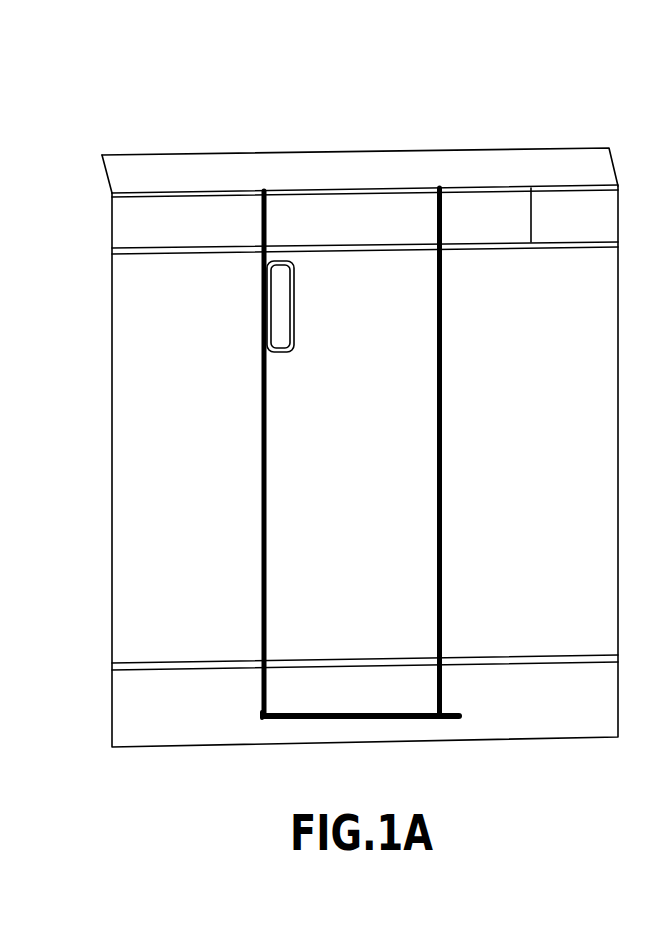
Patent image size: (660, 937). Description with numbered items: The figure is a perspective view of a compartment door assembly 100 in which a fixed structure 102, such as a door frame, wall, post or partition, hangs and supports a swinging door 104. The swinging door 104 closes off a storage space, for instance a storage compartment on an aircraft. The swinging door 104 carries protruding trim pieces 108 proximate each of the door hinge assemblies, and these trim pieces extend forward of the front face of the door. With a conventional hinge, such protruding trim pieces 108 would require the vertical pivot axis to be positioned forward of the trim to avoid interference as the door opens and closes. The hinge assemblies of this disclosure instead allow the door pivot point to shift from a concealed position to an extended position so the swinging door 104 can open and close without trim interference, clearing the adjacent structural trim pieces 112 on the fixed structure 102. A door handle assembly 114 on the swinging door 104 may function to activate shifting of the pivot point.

The compartment door assembly 100 is at (101, 70).
The fixed structure 102 is at (199, 172).
The swinging door 104 is at (350, 270).
The protruding trim pieces 108 is at (417, 245).
The adjacent structural trim pieces 112 is at (532, 188).
The door handle assembly 114 is at (278, 330).